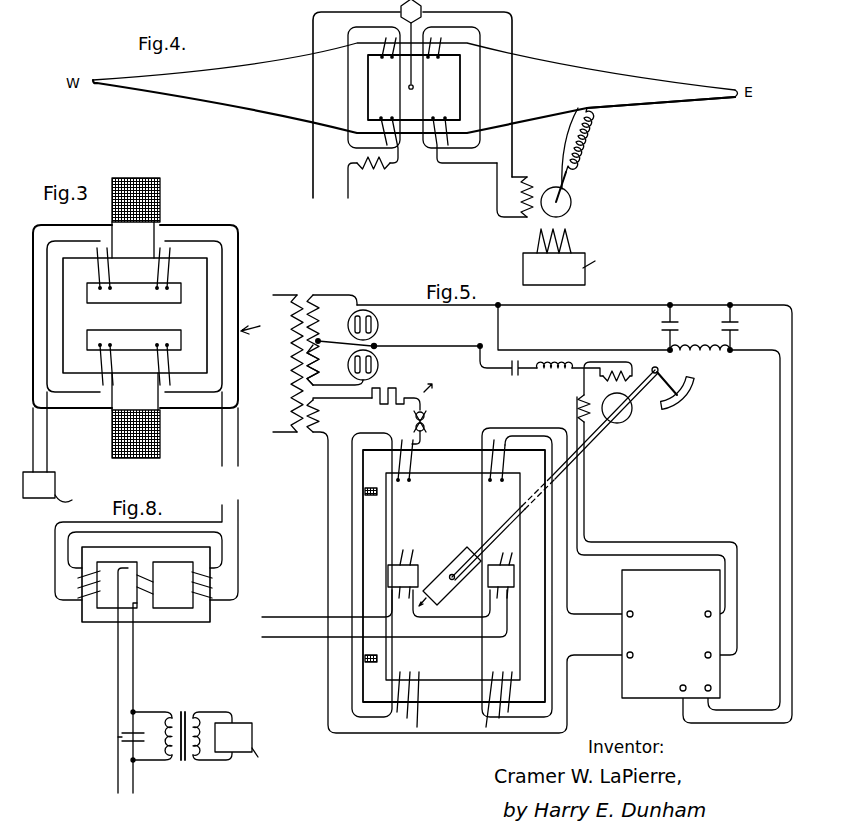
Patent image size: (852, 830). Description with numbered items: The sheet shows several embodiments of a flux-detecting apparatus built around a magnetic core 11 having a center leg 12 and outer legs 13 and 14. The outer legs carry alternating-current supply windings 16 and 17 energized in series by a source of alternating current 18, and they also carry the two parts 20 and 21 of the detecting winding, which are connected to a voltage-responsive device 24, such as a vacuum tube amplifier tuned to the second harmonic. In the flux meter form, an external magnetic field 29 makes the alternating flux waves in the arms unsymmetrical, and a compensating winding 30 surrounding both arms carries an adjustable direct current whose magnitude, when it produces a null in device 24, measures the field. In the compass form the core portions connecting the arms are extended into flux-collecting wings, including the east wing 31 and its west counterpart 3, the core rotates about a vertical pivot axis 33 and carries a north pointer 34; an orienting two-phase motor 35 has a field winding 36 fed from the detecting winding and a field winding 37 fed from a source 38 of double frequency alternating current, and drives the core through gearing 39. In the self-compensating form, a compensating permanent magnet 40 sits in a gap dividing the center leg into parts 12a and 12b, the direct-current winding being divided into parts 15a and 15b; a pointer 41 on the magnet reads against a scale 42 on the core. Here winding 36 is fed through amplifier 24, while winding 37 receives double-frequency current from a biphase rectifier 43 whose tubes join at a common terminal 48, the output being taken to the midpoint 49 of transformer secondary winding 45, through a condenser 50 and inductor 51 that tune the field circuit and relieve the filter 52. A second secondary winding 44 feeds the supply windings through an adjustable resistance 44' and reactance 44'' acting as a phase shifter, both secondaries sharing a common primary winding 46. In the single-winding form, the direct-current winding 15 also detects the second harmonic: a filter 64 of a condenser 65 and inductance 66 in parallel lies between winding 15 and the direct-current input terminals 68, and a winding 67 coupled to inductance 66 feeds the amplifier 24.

In FIG. 4, the string west end 3 is at (97, 84).
In FIG. 4, the east indicating wing 31 is at (737, 99).
In FIG. 4, the magnetic core 11 is at (310, 117).
In FIG. 3, the magnetic core 11 is at (196, 384).
In FIG. 5, the magnetic core 11 is at (386, 511).
In FIG. 3, the center leg 12 is at (135, 315).
In FIG. 5, the center leg part 12a is at (388, 578).
In FIG. 5, the center leg part 12b is at (514, 578).
In FIG. 4, the outer leg 13 is at (414, 87).
In FIG. 3, the outer leg 13 is at (140, 284).
In FIG. 4, the outer leg 14 is at (418, 136).
In FIG. 3, the outer leg 14 is at (134, 340).
In FIG. 8, the direct-current winding 15 is at (154, 597).
In FIG. 5, the direct-current winding part 15a is at (407, 550).
In FIG. 5, the direct-current winding part 15b is at (507, 551).
In FIG. 4, the alternating-current supply winding 16 is at (385, 39).
In FIG. 3, the alternating-current supply winding 16 is at (166, 272).
In FIG. 8, the alternating-current supply winding 16 is at (78, 579).
In FIG. 5, the alternating-current supply winding 16 is at (408, 689).
In FIG. 4, the alternating-current supply winding 17 is at (387, 129).
In FIG. 3, the alternating-current supply winding 17 is at (170, 366).
In FIG. 8, the alternating-current supply winding 17 is at (212, 585).
In FIG. 5, the alternating-current supply winding 17 is at (385, 575).
In FIG. 4, the source of alternating current 18 is at (346, 181).
In FIG. 3, the source of alternating current 18 is at (230, 449).
In FIG. 8, the source of alternating current 18 is at (230, 515).
In FIG. 5, the source of alternating current 18 is at (329, 455).
In FIG. 4, the detecting winding 20 is at (435, 39).
In FIG. 3, the detecting winding 20 is at (94, 272).
In FIG. 5, the detecting winding 20 is at (499, 692).
In FIG. 4, the detecting winding 21 is at (462, 141).
In FIG. 3, the detecting winding 21 is at (99, 368).
In FIG. 5, the detecting winding 21 is at (554, 572).
In FIG. 3, the voltage-responsive device 24 is at (75, 447).
In FIG. 8, the voltage-responsive device 24 is at (271, 760).
In FIG. 5, the voltage-responsive device 24 is at (671, 634).
In FIG. 3, the magnetic field 29 is at (258, 333).
In FIG. 3, the compensating winding 30 is at (161, 200).
In FIG. 4, the pivot axis 33 is at (415, 90).
In FIG. 5, the pivot axis 33 is at (455, 581).
In FIG. 4, the north pointer 34 is at (423, 3).
In FIG. 4, the two-phase motor 35 is at (571, 202).
In FIG. 5, the two-phase motor 35 is at (631, 413).
In FIG. 4, the field winding 36 is at (522, 190).
In FIG. 5, the field winding 36 is at (577, 408).
In FIG. 4, the field winding 37 is at (565, 235).
In FIG. 5, the field winding 37 is at (600, 378).
In FIG. 4, the source of double frequency alternating current 38 is at (621, 261).
In FIG. 4, the gearing 39 is at (588, 146).
In FIG. 5, the compensating permanent magnet 40 is at (451, 554).
In FIG. 5, the pointer 41 is at (565, 467).
In FIG. 5, the scale 42 is at (694, 393).
In FIG. 5, the biphase rectifier 43 is at (482, 334).
In FIG. 5, the transformer secondary winding 44 is at (339, 415).
In FIG. 5, the adjustable resistance 44' is at (402, 407).
In FIG. 5, the adjustable reactance 44'' is at (436, 427).
In FIG. 5, the transformer secondary winding 45 is at (318, 363).
In FIG. 5, the primary winding 46 is at (291, 380).
In FIG. 5, the common terminal 48 is at (378, 343).
In FIG. 5, the midpoint 49 is at (344, 351).
In FIG. 5, the condenser 50 is at (510, 372).
In FIG. 5, the inductor 51 is at (560, 372).
In FIG. 5, the filter 52 is at (709, 337).
In FIG. 8, the filter 64 is at (151, 736).
In FIG. 8, the condenser 65 is at (118, 738).
In FIG. 8, the inductance 66 is at (179, 763).
In FIG. 8, the winding 67 is at (197, 716).
In FIG. 8, the direct-current input terminals 68 is at (122, 778).